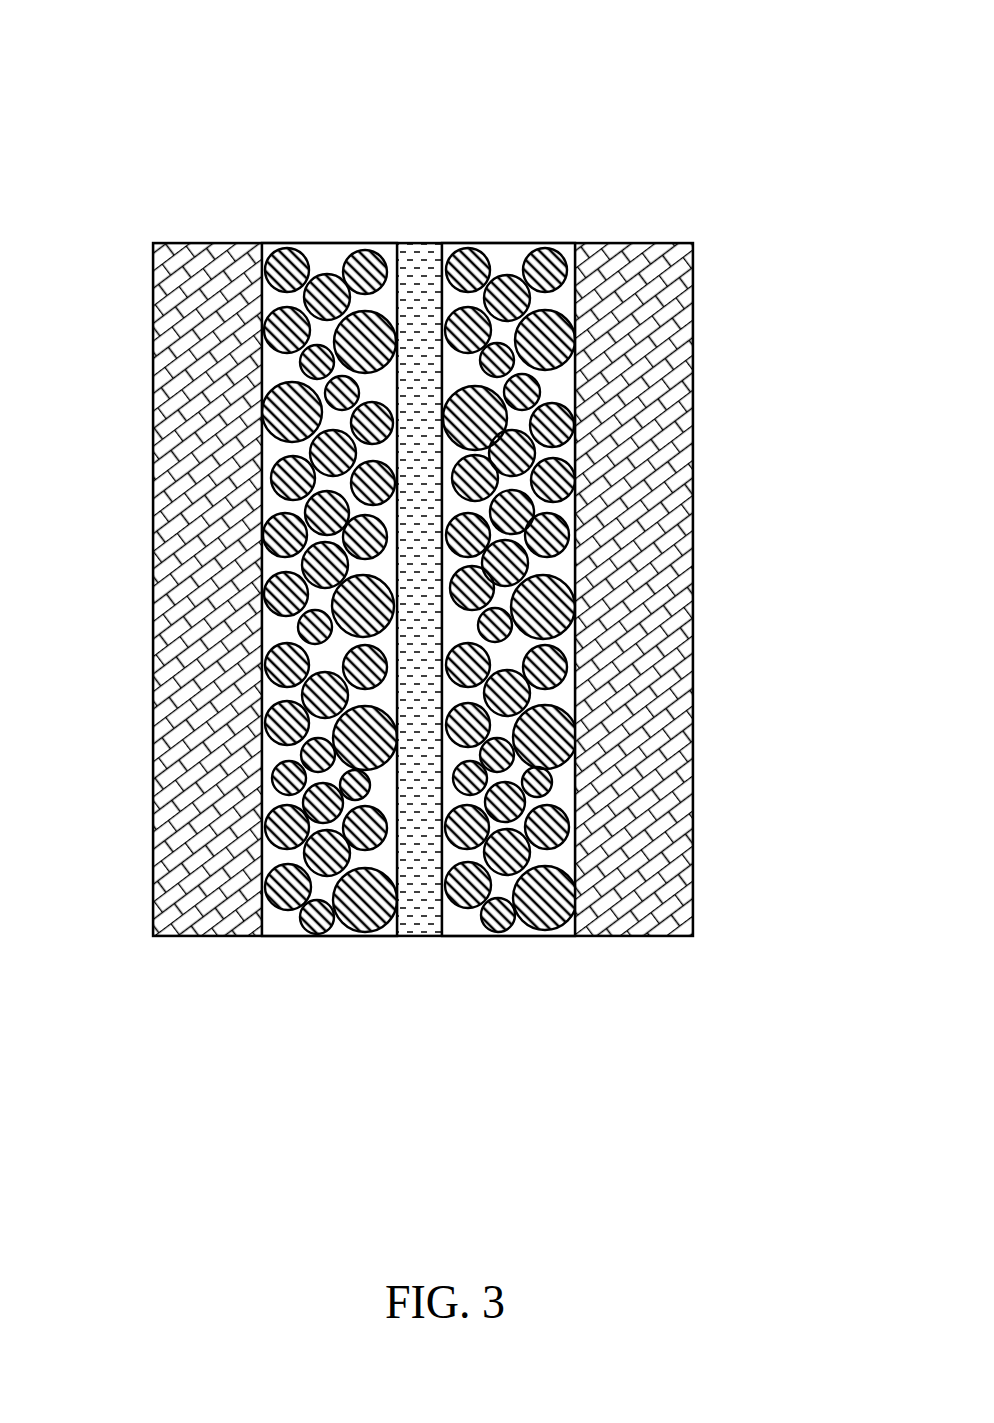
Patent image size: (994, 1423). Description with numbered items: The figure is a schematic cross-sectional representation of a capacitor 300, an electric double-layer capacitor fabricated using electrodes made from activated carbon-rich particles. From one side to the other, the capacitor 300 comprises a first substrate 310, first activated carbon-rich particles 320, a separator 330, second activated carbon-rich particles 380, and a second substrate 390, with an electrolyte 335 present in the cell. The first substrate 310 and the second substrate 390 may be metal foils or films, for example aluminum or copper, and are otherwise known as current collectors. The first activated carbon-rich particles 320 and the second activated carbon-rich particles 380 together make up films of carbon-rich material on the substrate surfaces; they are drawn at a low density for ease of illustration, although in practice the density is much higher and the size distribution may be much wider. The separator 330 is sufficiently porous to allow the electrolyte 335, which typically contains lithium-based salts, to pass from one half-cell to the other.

The capacitor 300 is at (732, 115).
The first substrate 310 is at (218, 250).
The first activated carbon-rich particles 320 is at (317, 934).
The separator 330 is at (416, 262).
The electrolyte 335 is at (325, 258).
The second activated carbon-rich particles 380 is at (492, 928).
The second substrate 390 is at (650, 243).